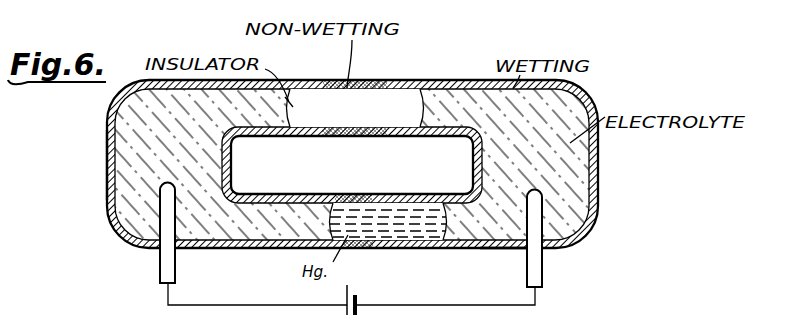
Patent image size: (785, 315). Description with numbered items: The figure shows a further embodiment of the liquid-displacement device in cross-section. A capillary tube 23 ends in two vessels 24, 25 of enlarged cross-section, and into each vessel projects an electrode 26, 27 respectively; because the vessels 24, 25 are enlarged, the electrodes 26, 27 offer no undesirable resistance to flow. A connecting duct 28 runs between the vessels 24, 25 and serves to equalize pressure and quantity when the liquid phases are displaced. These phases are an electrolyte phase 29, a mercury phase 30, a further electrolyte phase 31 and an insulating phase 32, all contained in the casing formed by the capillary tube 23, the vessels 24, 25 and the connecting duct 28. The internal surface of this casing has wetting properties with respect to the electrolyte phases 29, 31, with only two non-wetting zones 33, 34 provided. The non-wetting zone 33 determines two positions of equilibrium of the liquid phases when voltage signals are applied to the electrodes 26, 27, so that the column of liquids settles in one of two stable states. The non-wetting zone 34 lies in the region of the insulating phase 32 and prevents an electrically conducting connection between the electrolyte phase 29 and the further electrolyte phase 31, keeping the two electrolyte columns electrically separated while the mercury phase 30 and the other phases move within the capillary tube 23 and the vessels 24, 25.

The capillary tube 23 is at (395, 246).
The vessel 24 is at (599, 166).
The vessel 25 is at (113, 173).
The electrode 26 is at (543, 268).
The electrode 27 is at (160, 268).
The connecting duct 28 is at (435, 89).
The electrolyte phase 29 is at (261, 239).
The mercury phase 30 is at (421, 230).
The further electrolyte phase 31 is at (497, 241).
The insulating phase 32 is at (305, 98).
The non-wetting zone 33 is at (358, 199).
The non-wetting zone 34 is at (355, 137).